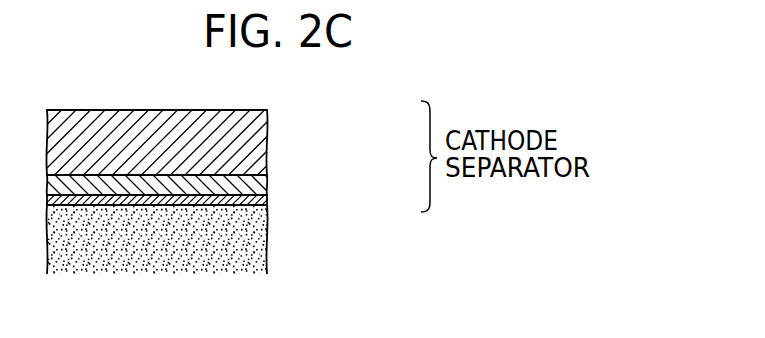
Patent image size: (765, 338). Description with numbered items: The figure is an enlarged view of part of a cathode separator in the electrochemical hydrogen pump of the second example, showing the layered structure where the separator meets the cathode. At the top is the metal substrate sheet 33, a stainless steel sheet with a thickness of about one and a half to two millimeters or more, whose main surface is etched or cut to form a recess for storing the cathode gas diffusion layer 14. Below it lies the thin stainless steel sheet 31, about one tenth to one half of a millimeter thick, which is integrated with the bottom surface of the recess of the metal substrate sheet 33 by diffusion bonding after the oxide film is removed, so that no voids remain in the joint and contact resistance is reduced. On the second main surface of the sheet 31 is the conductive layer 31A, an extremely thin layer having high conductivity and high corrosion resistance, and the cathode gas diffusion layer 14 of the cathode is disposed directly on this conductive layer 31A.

The metal substrate sheet 33 is at (268, 128).
The sheet 31 is at (268, 182).
The conductive layer 31A is at (268, 200).
The cathode gas diffusion layer 14 is at (268, 245).